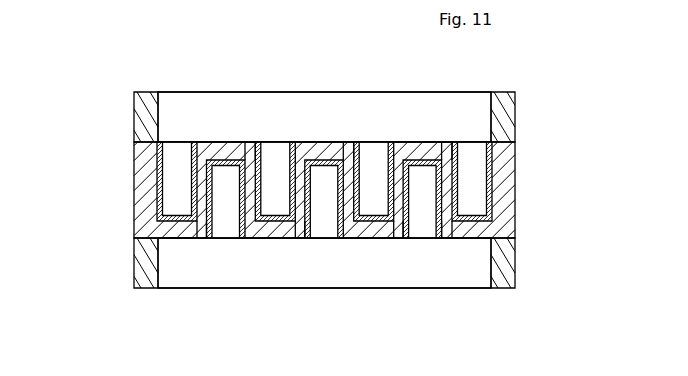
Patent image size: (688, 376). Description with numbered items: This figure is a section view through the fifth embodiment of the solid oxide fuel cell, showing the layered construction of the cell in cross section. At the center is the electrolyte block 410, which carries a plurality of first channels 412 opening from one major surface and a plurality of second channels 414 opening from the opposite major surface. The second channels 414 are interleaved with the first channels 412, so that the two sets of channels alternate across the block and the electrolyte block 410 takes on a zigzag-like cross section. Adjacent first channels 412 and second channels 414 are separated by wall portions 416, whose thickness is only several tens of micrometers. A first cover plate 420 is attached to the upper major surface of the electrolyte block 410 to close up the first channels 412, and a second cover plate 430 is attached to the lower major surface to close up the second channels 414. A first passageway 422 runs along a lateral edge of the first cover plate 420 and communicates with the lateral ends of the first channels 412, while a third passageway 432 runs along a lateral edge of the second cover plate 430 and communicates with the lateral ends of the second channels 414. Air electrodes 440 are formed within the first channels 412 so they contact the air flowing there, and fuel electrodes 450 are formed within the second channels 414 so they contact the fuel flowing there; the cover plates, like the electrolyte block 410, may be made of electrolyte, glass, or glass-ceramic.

The electrolyte block 410 is at (128, 157).
The first channels 412 is at (183, 152).
The second channels 414 is at (230, 226).
The wall portions 416 is at (197, 198).
The first cover plate 420 is at (148, 113).
The first passageway 422 is at (313, 104).
The second cover plate 430 is at (148, 265).
The third passageway 432 is at (348, 280).
The air electrodes 440 is at (246, 145).
The fuel electrodes 450 is at (299, 238).